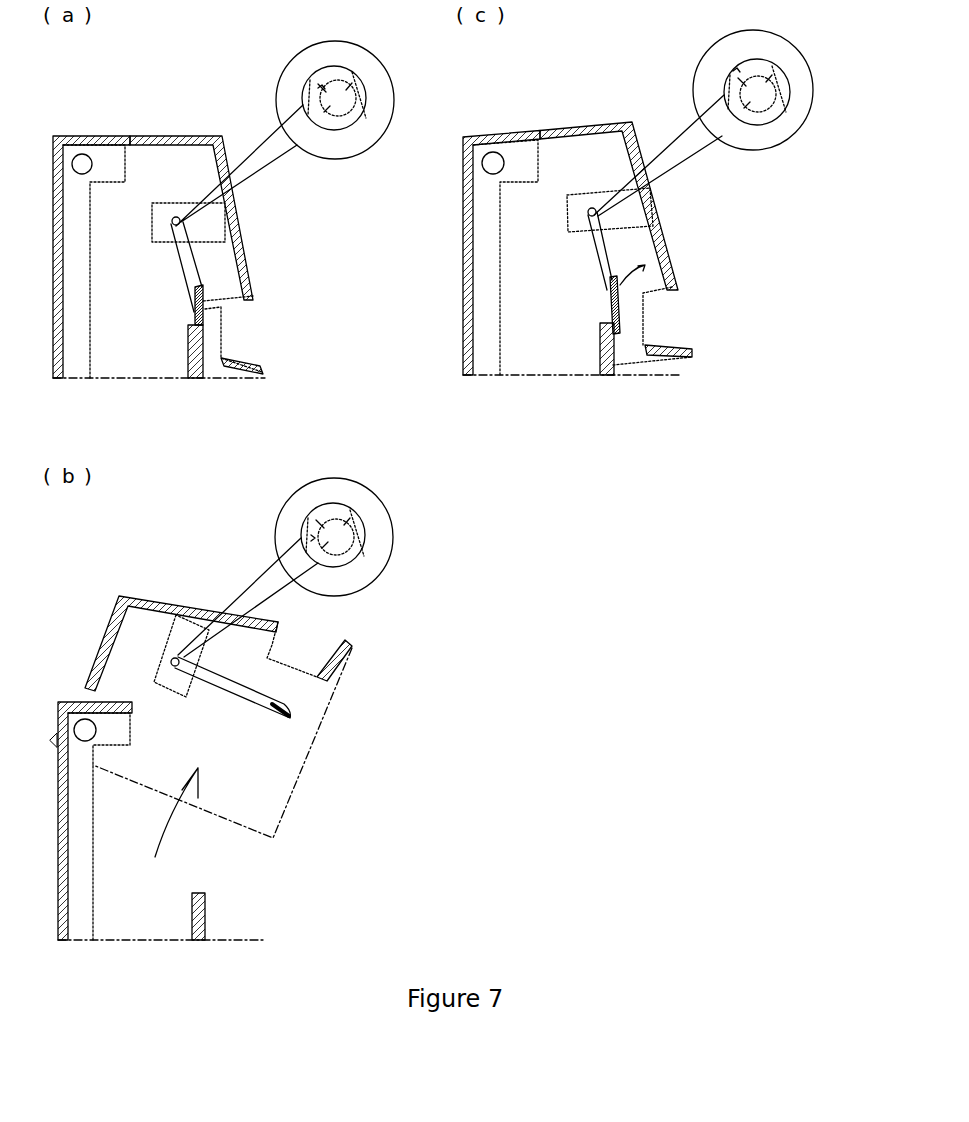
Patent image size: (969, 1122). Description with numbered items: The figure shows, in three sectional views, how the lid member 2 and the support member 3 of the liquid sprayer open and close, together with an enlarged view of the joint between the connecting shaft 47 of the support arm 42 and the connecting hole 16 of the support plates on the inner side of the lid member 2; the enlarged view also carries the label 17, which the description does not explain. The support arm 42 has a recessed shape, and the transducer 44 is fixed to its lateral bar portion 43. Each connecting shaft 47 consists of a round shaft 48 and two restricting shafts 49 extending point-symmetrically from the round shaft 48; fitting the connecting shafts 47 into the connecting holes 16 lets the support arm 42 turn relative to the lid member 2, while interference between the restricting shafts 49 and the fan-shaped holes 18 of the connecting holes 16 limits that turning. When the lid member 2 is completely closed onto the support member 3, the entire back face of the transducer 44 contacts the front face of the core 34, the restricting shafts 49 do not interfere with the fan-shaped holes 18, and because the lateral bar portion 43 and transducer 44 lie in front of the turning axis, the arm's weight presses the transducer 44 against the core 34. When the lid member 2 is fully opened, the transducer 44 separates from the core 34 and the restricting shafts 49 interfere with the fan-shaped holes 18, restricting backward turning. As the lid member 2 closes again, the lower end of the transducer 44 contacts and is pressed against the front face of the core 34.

The lid member 2 is at (195, 136).
The support member 3 is at (92, 136).
The connecting hole 16 is at (322, 85).
The bearing hole 17 is at (347, 77).
The fan-shaped hole 18 is at (358, 88).
The core 34 is at (198, 372).
The support arm 42 is at (195, 270).
The lateral bar portion 43 is at (215, 300).
The transducer 44 is at (205, 332).
The connecting shaft 47 is at (322, 118).
The round shaft 48 is at (349, 125).
The restricting shaft 49 is at (362, 110).